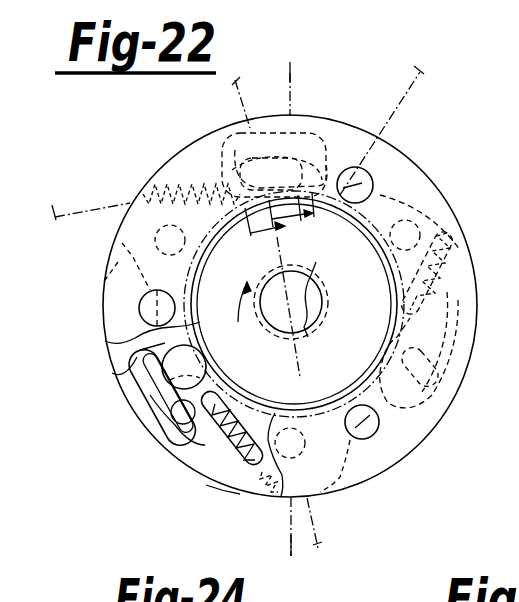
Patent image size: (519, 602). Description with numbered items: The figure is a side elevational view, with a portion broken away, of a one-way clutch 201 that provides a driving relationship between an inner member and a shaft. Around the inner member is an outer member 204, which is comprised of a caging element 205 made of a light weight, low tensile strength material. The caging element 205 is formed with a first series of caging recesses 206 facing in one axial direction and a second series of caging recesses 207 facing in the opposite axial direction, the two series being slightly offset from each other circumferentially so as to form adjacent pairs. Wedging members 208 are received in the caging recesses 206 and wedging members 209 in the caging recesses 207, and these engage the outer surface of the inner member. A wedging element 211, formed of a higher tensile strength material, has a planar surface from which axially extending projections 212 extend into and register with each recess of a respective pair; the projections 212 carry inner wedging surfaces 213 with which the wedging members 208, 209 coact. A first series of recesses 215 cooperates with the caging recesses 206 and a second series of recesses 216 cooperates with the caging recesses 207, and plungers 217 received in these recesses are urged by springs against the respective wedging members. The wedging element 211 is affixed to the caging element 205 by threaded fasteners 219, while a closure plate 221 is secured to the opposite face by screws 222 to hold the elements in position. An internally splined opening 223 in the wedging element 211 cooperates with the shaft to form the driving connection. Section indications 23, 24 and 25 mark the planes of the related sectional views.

The section line 23- 23 is at (288, 72).
The section line 24- 24 is at (234, 82).
The section line 25- 25 is at (418, 71).
The one-way clutch 201 is at (207, 484).
The outer member 204 is at (462, 228).
The caging element 205 is at (112, 374).
The caging recesses 206 is at (297, 337).
The caging recesses 207 is at (386, 295).
The wedging members 208 is at (318, 337).
The wedging members 209 is at (296, 354).
The wedging element 211 is at (112, 290).
The projections 212 is at (328, 130).
The wedging surfaces 213 is at (300, 122).
The recesses 215 is at (196, 160).
The recesses 216 is at (160, 180).
The plungers 217 is at (165, 372).
The threaded fasteners 219 is at (155, 242).
The closure plate 221 is at (103, 323).
The screws 222 is at (372, 176).
The internally splined opening 223 is at (328, 286).